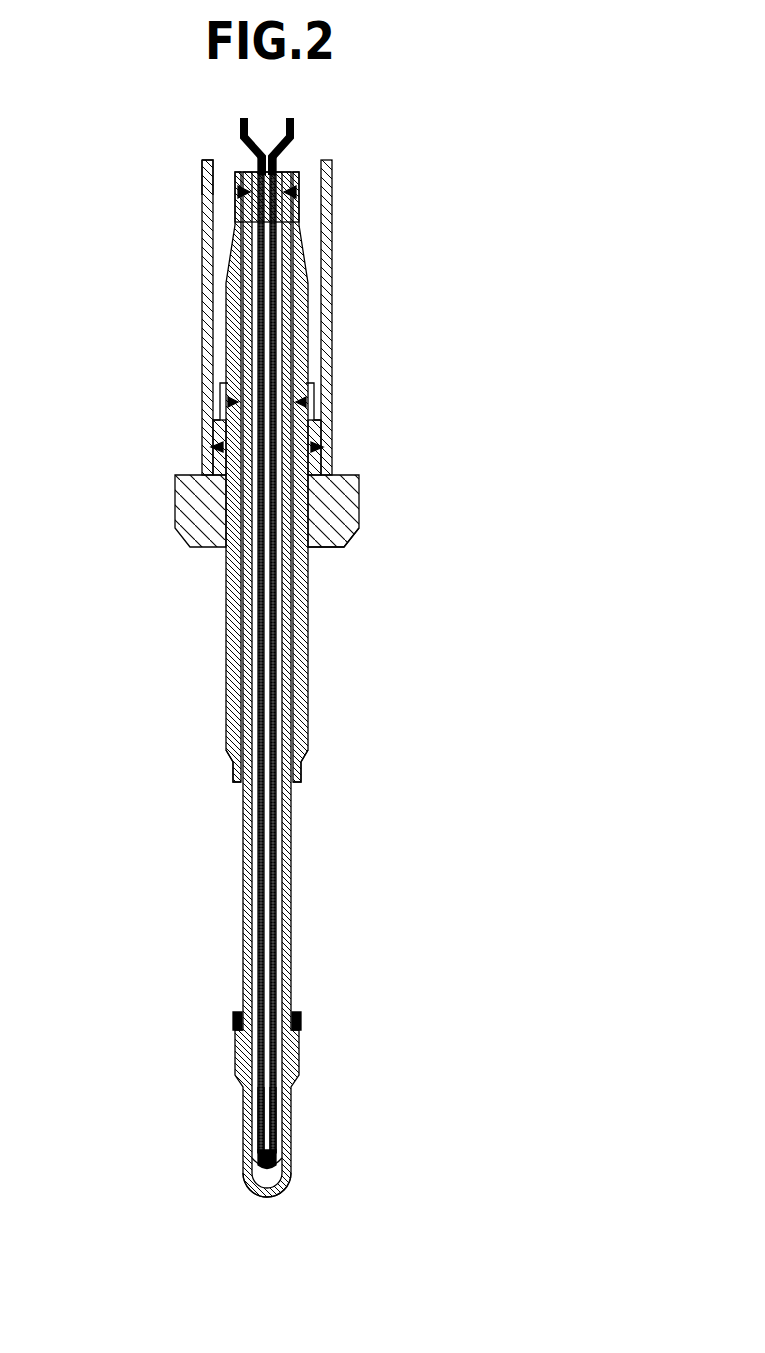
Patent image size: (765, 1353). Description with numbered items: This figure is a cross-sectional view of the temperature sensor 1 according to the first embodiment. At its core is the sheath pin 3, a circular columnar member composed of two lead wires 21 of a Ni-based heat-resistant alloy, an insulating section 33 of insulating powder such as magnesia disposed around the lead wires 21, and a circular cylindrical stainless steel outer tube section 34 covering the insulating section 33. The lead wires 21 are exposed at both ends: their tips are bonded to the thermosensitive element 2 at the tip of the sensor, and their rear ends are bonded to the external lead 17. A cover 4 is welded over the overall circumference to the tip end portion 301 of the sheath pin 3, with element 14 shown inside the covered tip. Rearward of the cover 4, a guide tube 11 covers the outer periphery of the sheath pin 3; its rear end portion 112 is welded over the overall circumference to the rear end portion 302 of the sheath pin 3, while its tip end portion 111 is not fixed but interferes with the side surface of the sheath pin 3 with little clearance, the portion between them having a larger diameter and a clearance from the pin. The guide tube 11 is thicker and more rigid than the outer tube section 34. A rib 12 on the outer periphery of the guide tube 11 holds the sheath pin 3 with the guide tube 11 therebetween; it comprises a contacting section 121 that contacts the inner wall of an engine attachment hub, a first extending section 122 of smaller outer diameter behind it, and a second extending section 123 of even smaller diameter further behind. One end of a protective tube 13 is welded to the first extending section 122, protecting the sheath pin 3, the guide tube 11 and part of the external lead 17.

The temperature sensor 1 is at (485, 265).
The thermosensitive element 2 is at (270, 1182).
The sheath pin 3 is at (269, 677).
The cover 4 is at (289, 1160).
The guide tube 11 is at (308, 640).
The rib 12 is at (182, 520).
The protective tube 13 is at (207, 265).
The filler at tip 14 is at (250, 1163).
The external lead 17 is at (296, 128).
The lead wires 21 is at (256, 1118).
The insulating section 33 is at (272, 830).
The outer tube section 34 is at (294, 940).
The tip end portion 111 is at (303, 770).
The rear end portion 112 is at (206, 188).
The contacting section 121 is at (340, 540).
The first extending section 122 is at (326, 441).
The second extending section 123 is at (316, 383).
The tip end portion 301 is at (240, 1058).
The rear end portion 302 is at (301, 185).